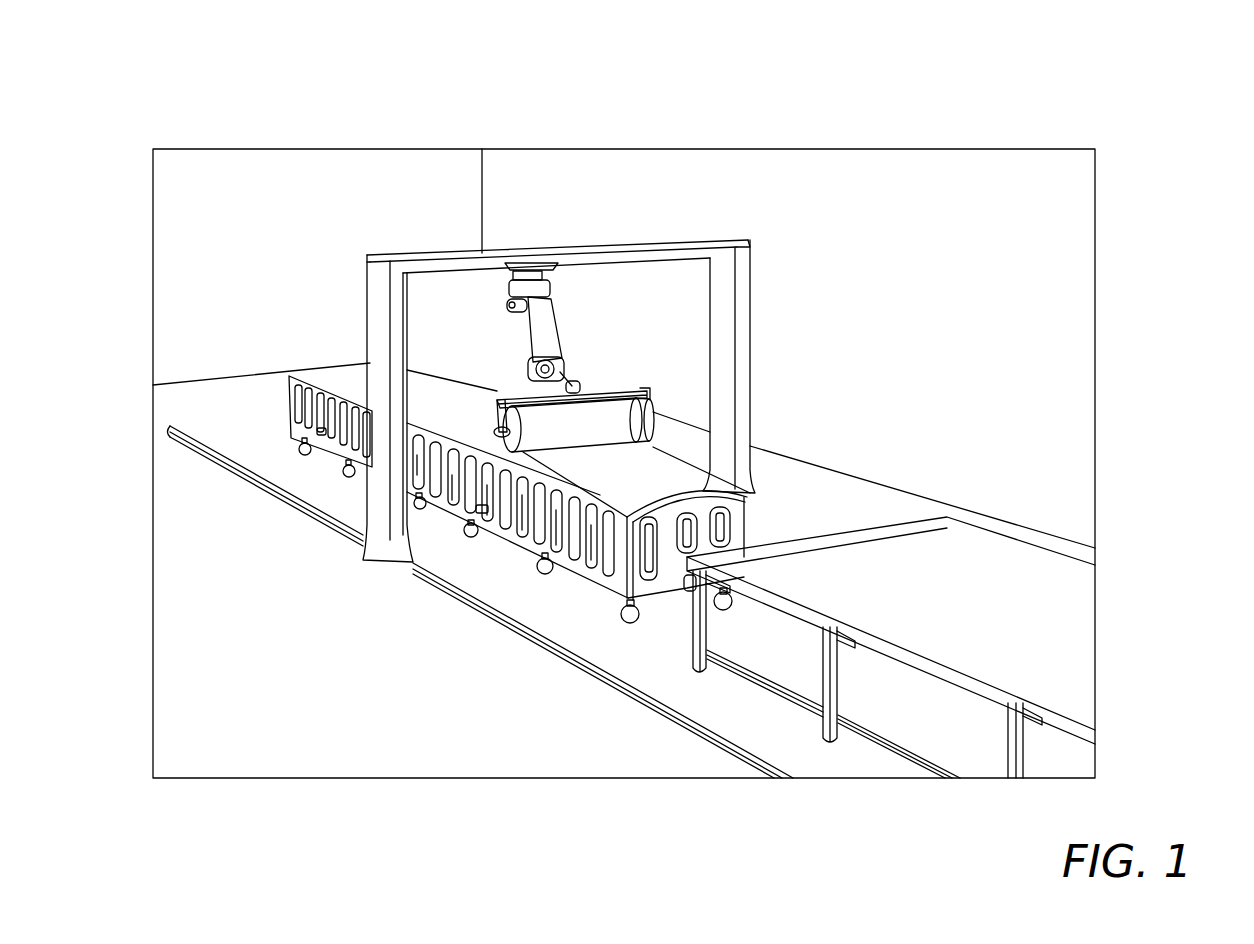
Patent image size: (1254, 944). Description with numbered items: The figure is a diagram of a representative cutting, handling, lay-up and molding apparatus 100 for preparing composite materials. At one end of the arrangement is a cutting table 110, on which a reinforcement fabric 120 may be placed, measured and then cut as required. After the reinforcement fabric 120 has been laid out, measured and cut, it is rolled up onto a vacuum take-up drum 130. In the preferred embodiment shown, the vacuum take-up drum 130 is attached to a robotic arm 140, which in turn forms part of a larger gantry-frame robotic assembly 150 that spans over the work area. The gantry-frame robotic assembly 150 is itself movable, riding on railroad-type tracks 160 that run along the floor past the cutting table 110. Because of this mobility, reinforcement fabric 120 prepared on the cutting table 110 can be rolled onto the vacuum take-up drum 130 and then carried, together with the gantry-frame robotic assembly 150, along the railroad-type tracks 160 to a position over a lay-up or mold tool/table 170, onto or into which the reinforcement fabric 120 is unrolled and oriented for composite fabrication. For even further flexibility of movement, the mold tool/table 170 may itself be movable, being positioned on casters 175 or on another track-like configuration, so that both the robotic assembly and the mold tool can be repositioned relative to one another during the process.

The manufacturing system 100 is at (1147, 73).
The cutting table 110 is at (788, 598).
The reinforcement fabric 120 is at (750, 479).
The vacuum take-up drum 130 is at (508, 407).
The robotic arm 140 is at (508, 290).
The gantry-frame robotic assembly 150 is at (398, 256).
The railroad-type tracks 160 is at (328, 517).
The lay-up or mold tool/table 170 is at (288, 392).
The casters 175 is at (550, 570).